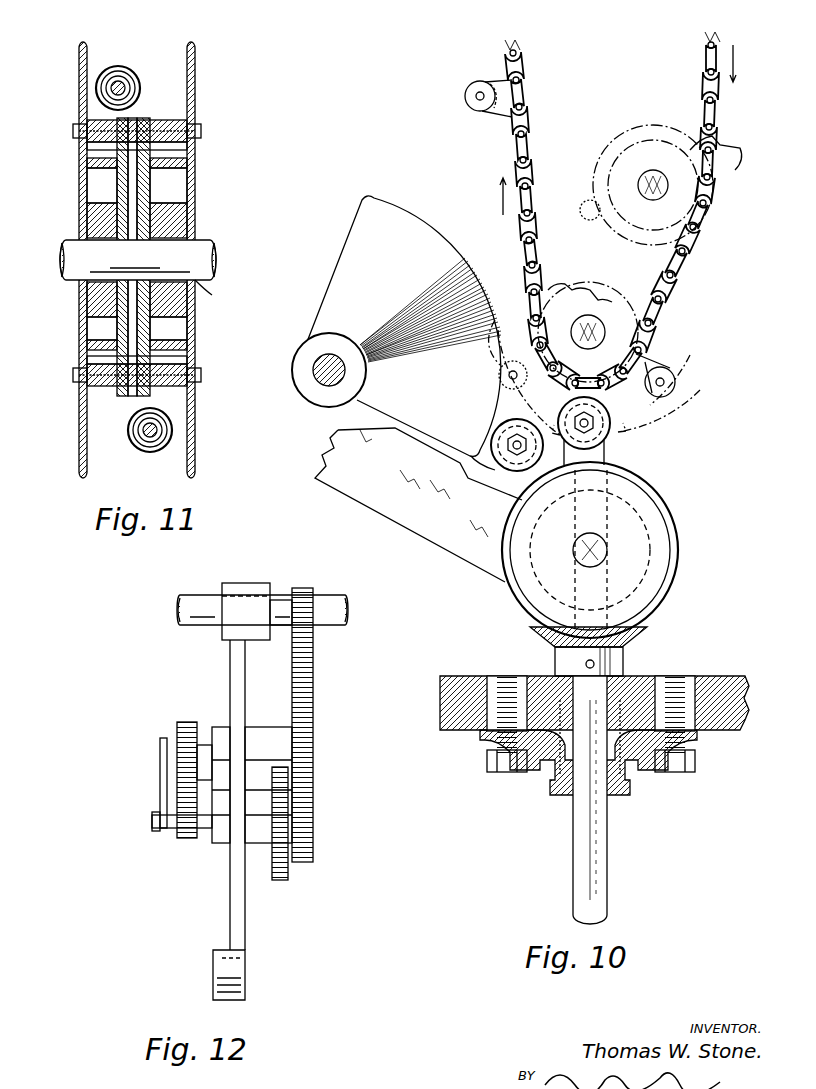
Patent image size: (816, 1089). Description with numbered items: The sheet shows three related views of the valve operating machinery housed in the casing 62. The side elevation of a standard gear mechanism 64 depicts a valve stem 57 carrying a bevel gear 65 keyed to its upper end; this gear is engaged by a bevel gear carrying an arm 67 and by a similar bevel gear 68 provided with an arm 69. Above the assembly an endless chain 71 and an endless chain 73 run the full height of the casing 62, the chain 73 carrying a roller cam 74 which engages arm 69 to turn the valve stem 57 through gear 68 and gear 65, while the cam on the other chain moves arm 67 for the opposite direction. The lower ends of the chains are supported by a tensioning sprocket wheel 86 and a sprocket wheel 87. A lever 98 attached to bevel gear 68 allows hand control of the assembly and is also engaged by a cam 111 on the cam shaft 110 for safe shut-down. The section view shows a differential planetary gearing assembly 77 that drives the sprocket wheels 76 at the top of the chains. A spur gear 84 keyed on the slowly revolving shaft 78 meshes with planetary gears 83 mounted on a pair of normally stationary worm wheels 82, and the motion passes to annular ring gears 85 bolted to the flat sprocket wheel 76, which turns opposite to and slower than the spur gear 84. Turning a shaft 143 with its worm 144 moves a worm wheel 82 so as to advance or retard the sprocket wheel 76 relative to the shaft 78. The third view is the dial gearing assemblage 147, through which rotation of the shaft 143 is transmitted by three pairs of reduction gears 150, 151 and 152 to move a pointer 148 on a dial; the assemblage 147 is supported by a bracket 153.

In FIG. 10, the valve stem 57 is at (600, 838).
In FIG. 10, the casing 62 is at (730, 728).
In FIG. 10, the standard gear mechanism 64 is at (728, 480).
In FIG. 10, the bevel gear 65 is at (640, 640).
In FIG. 10, the arm 67 is at (552, 405).
In FIG. 10, the bevel gear 68 is at (678, 538).
In FIG. 10, the arm 69 is at (608, 435).
In FIG. 10, the endless chain 71 is at (528, 150).
In FIG. 10, the endless chain 73 is at (530, 225).
In FIG. 10, the roller cam 74 is at (508, 306).
In FIG. 11, the sprocket wheel 76 is at (79, 85).
In FIG. 11, the planetary gearing assembly 77 is at (228, 218).
In FIG. 11, the shaft 78 is at (208, 290).
In FIG. 11, the worm wheel 82 is at (87, 122).
In FIG. 11, the planetary gear 83 is at (92, 165).
In FIG. 11, the spur gear 84 is at (87, 218).
In FIG. 11, the annular ring gear 85 is at (87, 150).
In FIG. 10, the tensioning sprocket wheel 86 is at (700, 168).
In FIG. 10, the sprocket wheel 87 is at (590, 300).
In FIG. 10, the lever 98 is at (358, 432).
In FIG. 10, the cam shaft 110 is at (310, 392).
In FIG. 10, the cam 111 is at (470, 268).
In FIG. 11, the shaft 143 is at (133, 74).
In FIG. 12, the shaft 143 is at (185, 625).
In FIG. 11, the worm 144 is at (124, 50).
In FIG. 12, the dial gearing assemblage 147 is at (208, 697).
In FIG. 12, the pointer 148 is at (160, 775).
In FIG. 12, the reduction gear 150 is at (313, 640).
In FIG. 12, the reduction gear 151 is at (182, 765).
In FIG. 12, the reduction gear 152 is at (288, 798).
In FIG. 12, the bracket 153 is at (230, 882).